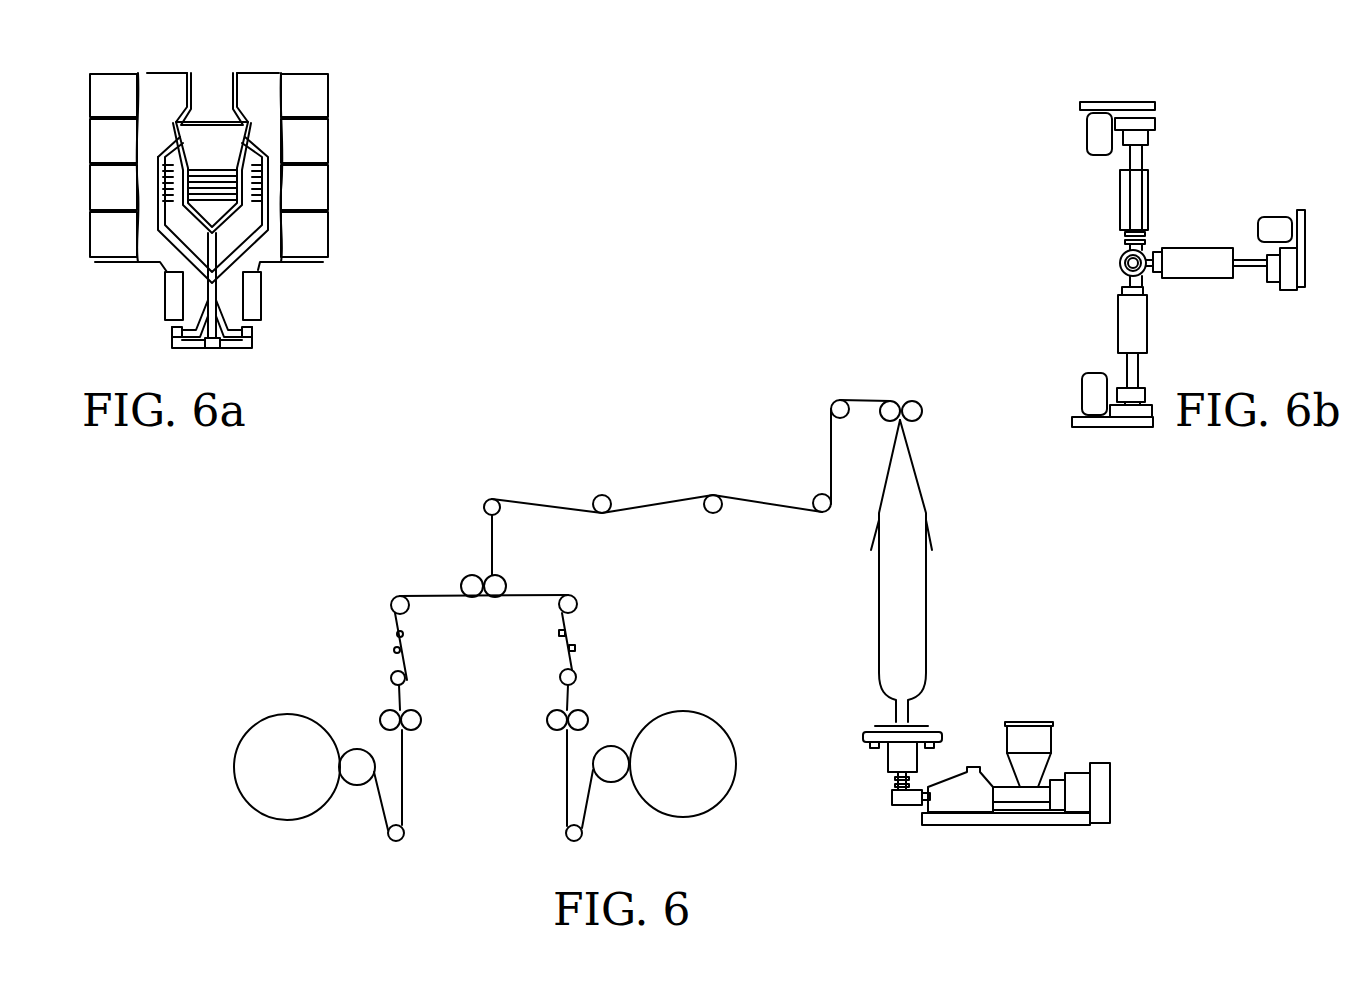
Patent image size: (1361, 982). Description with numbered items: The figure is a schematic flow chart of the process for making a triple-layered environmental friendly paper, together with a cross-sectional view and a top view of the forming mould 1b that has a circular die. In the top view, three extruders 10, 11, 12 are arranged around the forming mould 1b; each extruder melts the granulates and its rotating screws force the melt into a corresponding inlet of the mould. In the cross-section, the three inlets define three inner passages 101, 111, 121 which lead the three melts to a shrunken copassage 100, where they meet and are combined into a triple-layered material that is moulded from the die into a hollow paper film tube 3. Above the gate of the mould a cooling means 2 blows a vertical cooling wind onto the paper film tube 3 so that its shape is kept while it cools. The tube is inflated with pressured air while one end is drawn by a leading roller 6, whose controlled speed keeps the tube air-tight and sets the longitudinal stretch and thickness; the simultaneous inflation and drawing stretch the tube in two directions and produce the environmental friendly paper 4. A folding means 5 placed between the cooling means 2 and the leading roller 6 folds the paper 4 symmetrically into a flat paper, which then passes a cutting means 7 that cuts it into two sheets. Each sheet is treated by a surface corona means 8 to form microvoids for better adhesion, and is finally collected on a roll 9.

In FIG. 6B, the forming mould 1b is at (1120, 262).
In FIG. 6, the forming mould 1b is at (888, 765).
In FIG. 6, the cooling means 2 is at (937, 732).
In FIG. 6, the paper film tube 3 is at (892, 704).
In FIG. 6, the environmental friendly paper 4 is at (926, 645).
In FIG. 6, the folding means 5 is at (930, 535).
In FIG. 6, the leading roller 6 is at (922, 400).
In FIG. 6, the cutting means 7 is at (483, 538).
In FIG. 6, the surface corona means 8 is at (398, 640).
In FIG. 6, the roll 9 is at (262, 718).
In FIG. 6B, the extruder 10 is at (1147, 330).
In FIG. 6, the extruder 10 is at (1028, 715).
In FIG. 6B, the extruder 11 is at (1185, 248).
In FIG. 6B, the extruder 12 is at (1148, 185).
In FIG. 6A, the shrunken copassage 100 is at (237, 76).
In FIG. 6A, the inner passage 101 is at (170, 330).
In FIG. 6A, the inner passage 111 is at (258, 333).
In FIG. 6A, the inner passage 121 is at (215, 350).